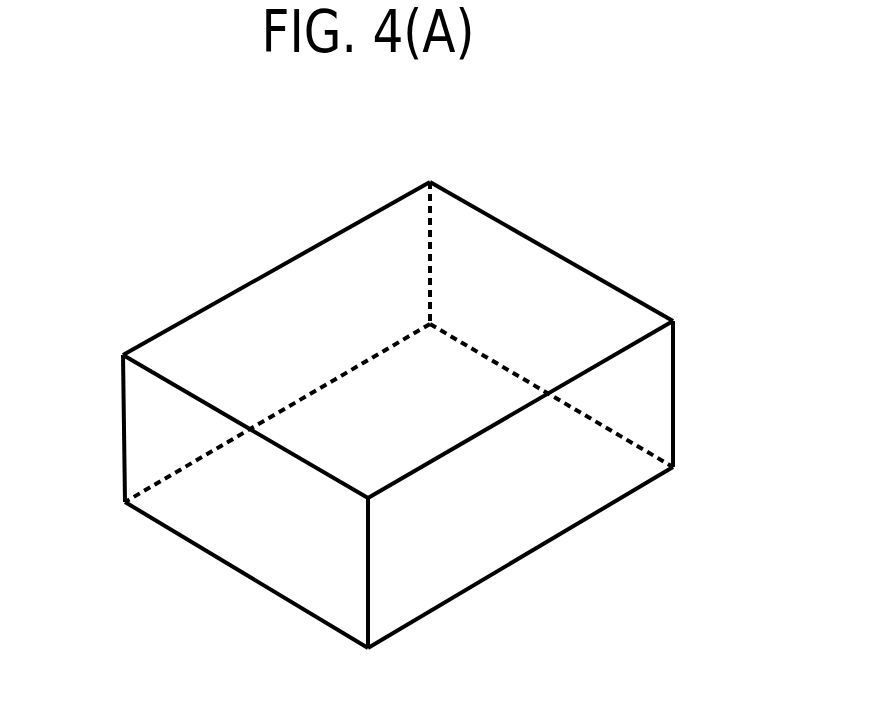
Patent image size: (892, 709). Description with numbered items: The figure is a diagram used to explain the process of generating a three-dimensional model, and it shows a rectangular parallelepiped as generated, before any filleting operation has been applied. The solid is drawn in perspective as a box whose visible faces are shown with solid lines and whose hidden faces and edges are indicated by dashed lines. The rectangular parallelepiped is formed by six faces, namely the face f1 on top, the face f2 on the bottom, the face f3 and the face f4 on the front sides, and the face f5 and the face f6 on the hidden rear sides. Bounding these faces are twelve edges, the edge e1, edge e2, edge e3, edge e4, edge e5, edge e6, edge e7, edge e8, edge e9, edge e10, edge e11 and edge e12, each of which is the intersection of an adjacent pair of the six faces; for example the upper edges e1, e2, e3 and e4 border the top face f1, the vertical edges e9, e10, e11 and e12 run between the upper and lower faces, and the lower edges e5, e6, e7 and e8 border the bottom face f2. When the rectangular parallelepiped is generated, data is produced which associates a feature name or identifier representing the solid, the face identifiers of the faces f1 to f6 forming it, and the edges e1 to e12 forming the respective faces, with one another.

The edge e1 is at (598, 356).
The edge e2 is at (557, 247).
The edge e3 is at (302, 250).
The edge e4 is at (198, 396).
The edge e5 is at (528, 555).
The edge e6 is at (613, 428).
The edge e7 is at (180, 465).
The edge e8 is at (237, 570).
The edge e9 is at (673, 427).
The edge e10 is at (425, 258).
The edge e11 is at (123, 462).
The edge e12 is at (367, 572).
The face f1 is at (472, 238).
The face f2 is at (452, 568).
The face f3 is at (590, 473).
The face f4 is at (220, 505).
The face f5 is at (270, 307).
The face f6 is at (572, 305).